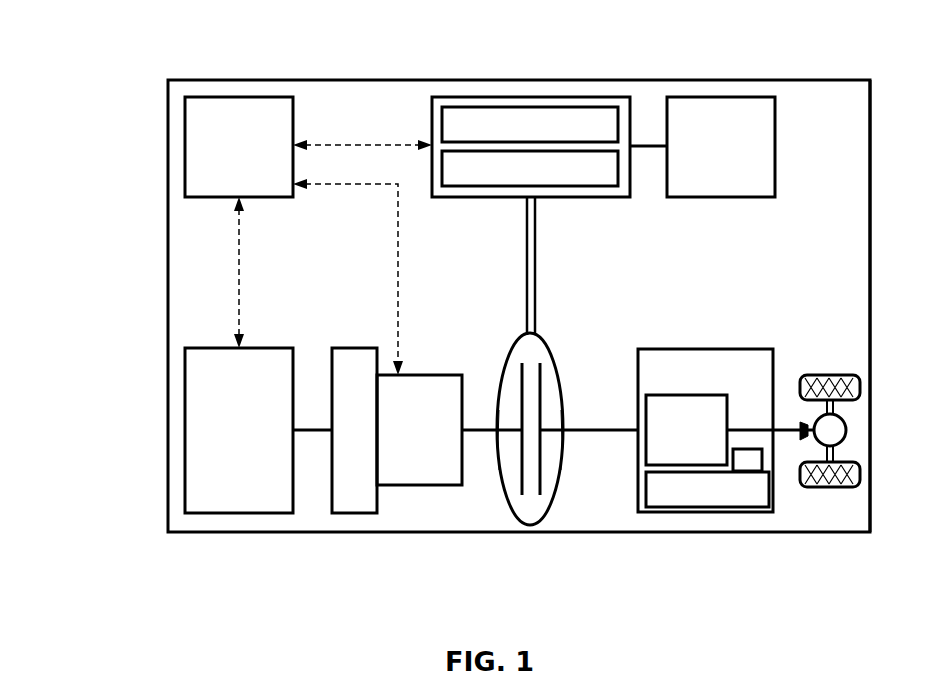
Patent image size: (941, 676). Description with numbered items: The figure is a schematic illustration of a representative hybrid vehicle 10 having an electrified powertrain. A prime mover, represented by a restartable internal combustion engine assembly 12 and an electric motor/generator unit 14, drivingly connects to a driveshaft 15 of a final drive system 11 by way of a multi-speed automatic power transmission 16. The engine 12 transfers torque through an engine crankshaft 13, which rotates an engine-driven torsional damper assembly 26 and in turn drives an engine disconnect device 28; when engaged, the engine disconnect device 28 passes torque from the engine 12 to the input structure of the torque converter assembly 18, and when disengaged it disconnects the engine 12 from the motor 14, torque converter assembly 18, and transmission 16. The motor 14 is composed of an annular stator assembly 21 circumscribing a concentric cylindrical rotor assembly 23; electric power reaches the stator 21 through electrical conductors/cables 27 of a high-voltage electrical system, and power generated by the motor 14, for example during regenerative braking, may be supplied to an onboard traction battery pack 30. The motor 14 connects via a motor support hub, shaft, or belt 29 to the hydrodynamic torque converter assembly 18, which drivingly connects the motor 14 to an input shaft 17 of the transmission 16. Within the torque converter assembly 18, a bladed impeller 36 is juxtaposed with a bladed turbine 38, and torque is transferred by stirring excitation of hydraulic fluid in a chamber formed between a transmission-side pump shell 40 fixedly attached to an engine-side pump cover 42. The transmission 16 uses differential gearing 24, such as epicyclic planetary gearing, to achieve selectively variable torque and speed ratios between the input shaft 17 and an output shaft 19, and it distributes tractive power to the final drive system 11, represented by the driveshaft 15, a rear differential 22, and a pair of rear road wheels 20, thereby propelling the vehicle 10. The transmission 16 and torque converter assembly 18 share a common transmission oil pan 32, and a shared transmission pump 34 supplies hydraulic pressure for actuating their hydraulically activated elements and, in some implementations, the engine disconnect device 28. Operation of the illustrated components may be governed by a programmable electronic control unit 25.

The hybrid vehicle 10 is at (154, 58).
The final drive system 11 is at (853, 258).
The internal combustion engine assembly 12 is at (200, 348).
The engine crankshaft 13 is at (313, 430).
The electric motor/generator unit 14 is at (451, 97).
The driveshaft 15 is at (790, 430).
The multi-speed automatic power transmission 16 is at (650, 349).
The input shaft 17 is at (596, 430).
The torque converter assembly 18 is at (557, 483).
The output shaft 19 is at (743, 430).
The rear road wheels 20 is at (825, 375).
The annular stator assembly 21 is at (442, 118).
The rear differential 22 is at (848, 428).
The cylindrical rotor assembly 23 is at (442, 162).
The differential gearing 24 is at (686, 395).
The programmable electronic control unit 25 is at (197, 97).
The torsional damper assembly 26 is at (368, 348).
The electrical conductors/cables 27 is at (639, 146).
The engine disconnect device 28 is at (433, 375).
The motor support hub, shaft, or belt 29 is at (527, 223).
The traction battery pack 30 is at (695, 97).
The transmission oil pan 32 is at (687, 490).
The transmission pump 34 is at (745, 458).
The bladed impeller 36 is at (522, 495).
The bladed turbine 38 is at (540, 495).
The transmission-side pump shell 40 is at (562, 460).
The engine-side pump cover 42 is at (502, 483).